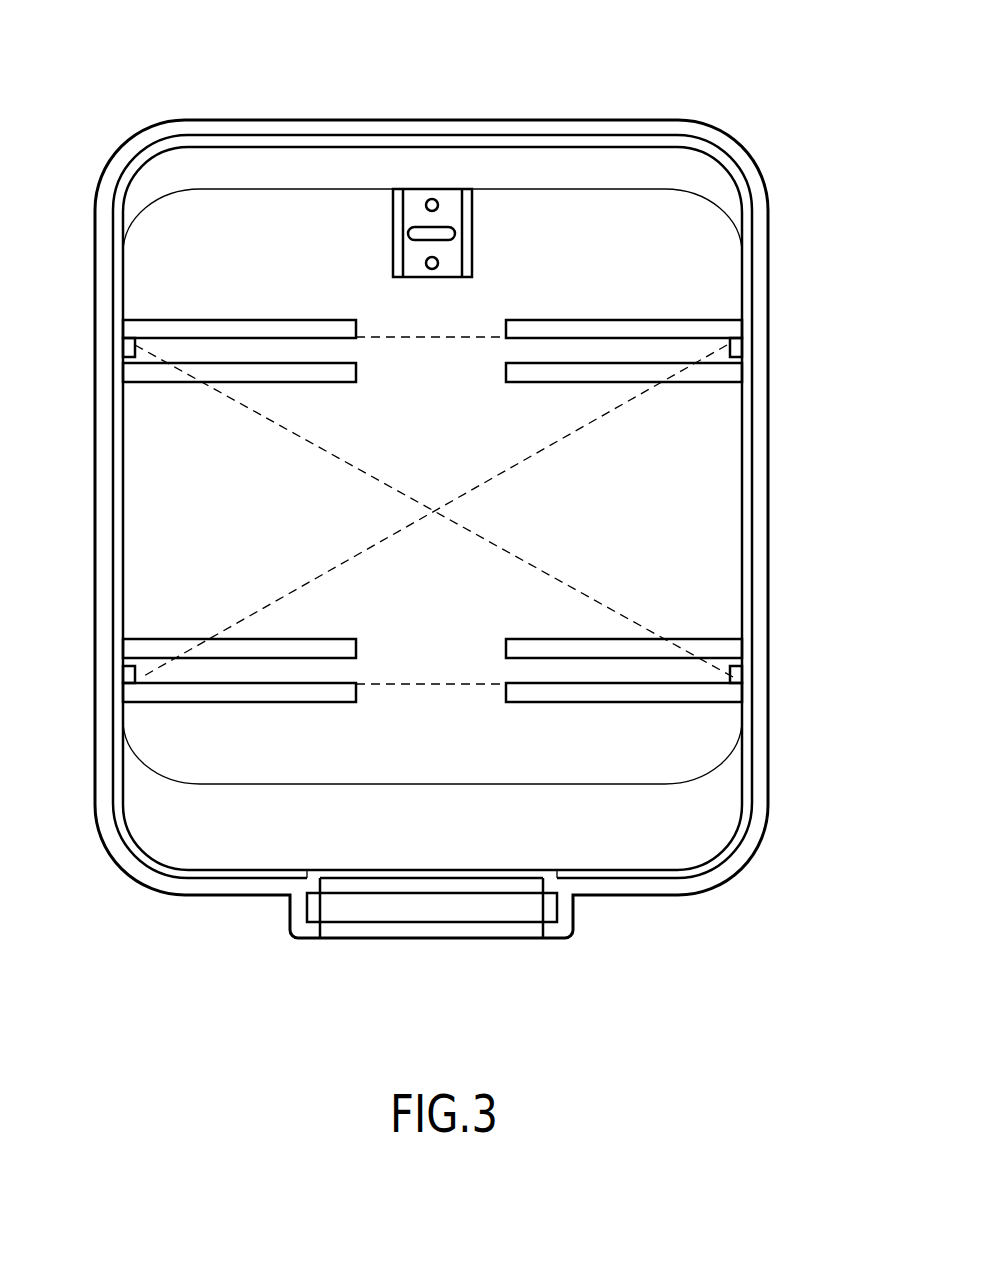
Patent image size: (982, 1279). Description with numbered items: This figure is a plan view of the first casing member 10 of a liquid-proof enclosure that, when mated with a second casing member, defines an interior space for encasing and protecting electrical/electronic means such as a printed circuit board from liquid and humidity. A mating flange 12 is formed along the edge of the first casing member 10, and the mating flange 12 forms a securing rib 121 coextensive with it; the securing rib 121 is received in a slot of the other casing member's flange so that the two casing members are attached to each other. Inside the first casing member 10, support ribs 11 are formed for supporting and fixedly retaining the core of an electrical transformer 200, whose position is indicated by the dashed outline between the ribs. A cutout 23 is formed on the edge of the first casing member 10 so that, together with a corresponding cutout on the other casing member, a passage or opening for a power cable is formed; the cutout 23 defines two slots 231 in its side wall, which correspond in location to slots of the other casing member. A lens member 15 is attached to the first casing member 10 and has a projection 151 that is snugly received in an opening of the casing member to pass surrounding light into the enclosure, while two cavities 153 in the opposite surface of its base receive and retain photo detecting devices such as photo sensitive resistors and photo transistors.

The first casing member 10 is at (128, 117).
The support ribs 11 is at (143, 320).
The mating flange 12 is at (105, 467).
The securing rib 121 is at (747, 765).
The lens member 15 is at (380, 172).
The projection 151 is at (408, 232).
The cavities 153 is at (428, 200).
The electrical transformer 200 is at (530, 565).
The cutout 23 is at (563, 918).
The slots 231 is at (347, 887).